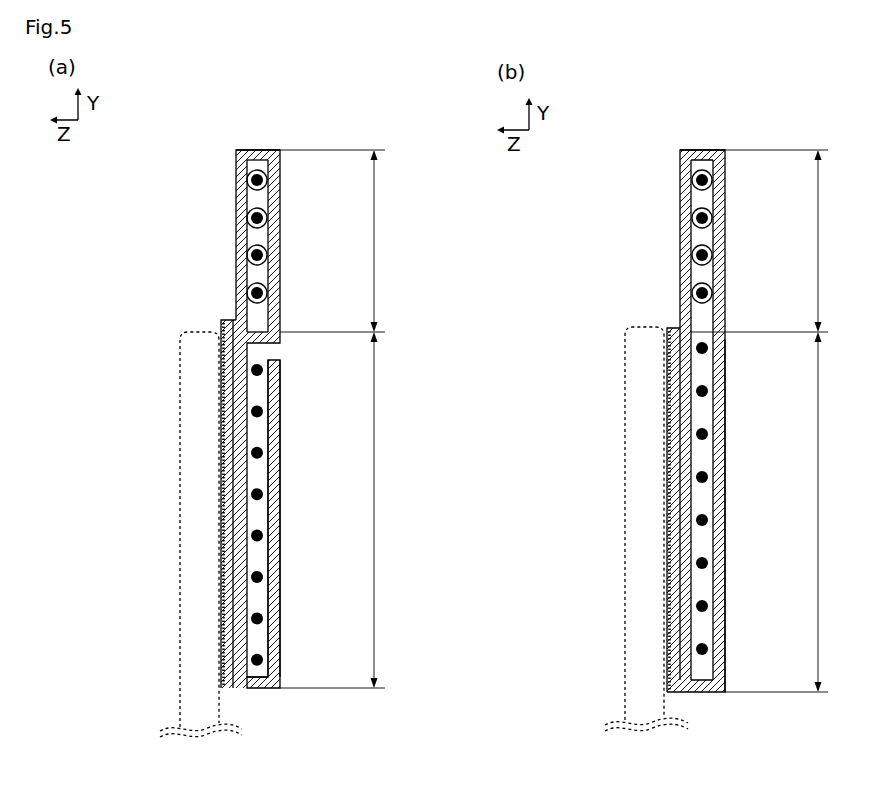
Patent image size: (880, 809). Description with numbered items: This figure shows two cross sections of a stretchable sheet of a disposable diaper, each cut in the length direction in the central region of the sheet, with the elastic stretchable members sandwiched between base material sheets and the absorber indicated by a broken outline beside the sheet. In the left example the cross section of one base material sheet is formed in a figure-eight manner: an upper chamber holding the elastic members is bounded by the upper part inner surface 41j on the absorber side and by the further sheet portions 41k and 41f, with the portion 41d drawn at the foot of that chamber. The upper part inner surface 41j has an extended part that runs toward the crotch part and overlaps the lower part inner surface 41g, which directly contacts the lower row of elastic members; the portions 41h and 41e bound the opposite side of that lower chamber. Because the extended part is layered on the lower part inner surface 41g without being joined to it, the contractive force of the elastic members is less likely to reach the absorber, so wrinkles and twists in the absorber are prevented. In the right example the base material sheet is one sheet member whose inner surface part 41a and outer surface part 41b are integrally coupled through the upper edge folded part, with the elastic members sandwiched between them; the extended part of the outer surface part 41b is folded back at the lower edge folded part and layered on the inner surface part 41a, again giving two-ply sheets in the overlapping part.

The inner surface part 41a is at (683, 229).
The outer surface part 41b is at (723, 229).
The partition bottom wall 41d is at (257, 331).
The lower side wall end 41e is at (285, 372).
The upper outer side wall 41f is at (285, 178).
The lower part inner surface 41g is at (222, 455).
The lower inner side wall 41h is at (278, 473).
The upper part inner surface 41j is at (240, 229).
The upper right side wall 41k is at (277, 229).